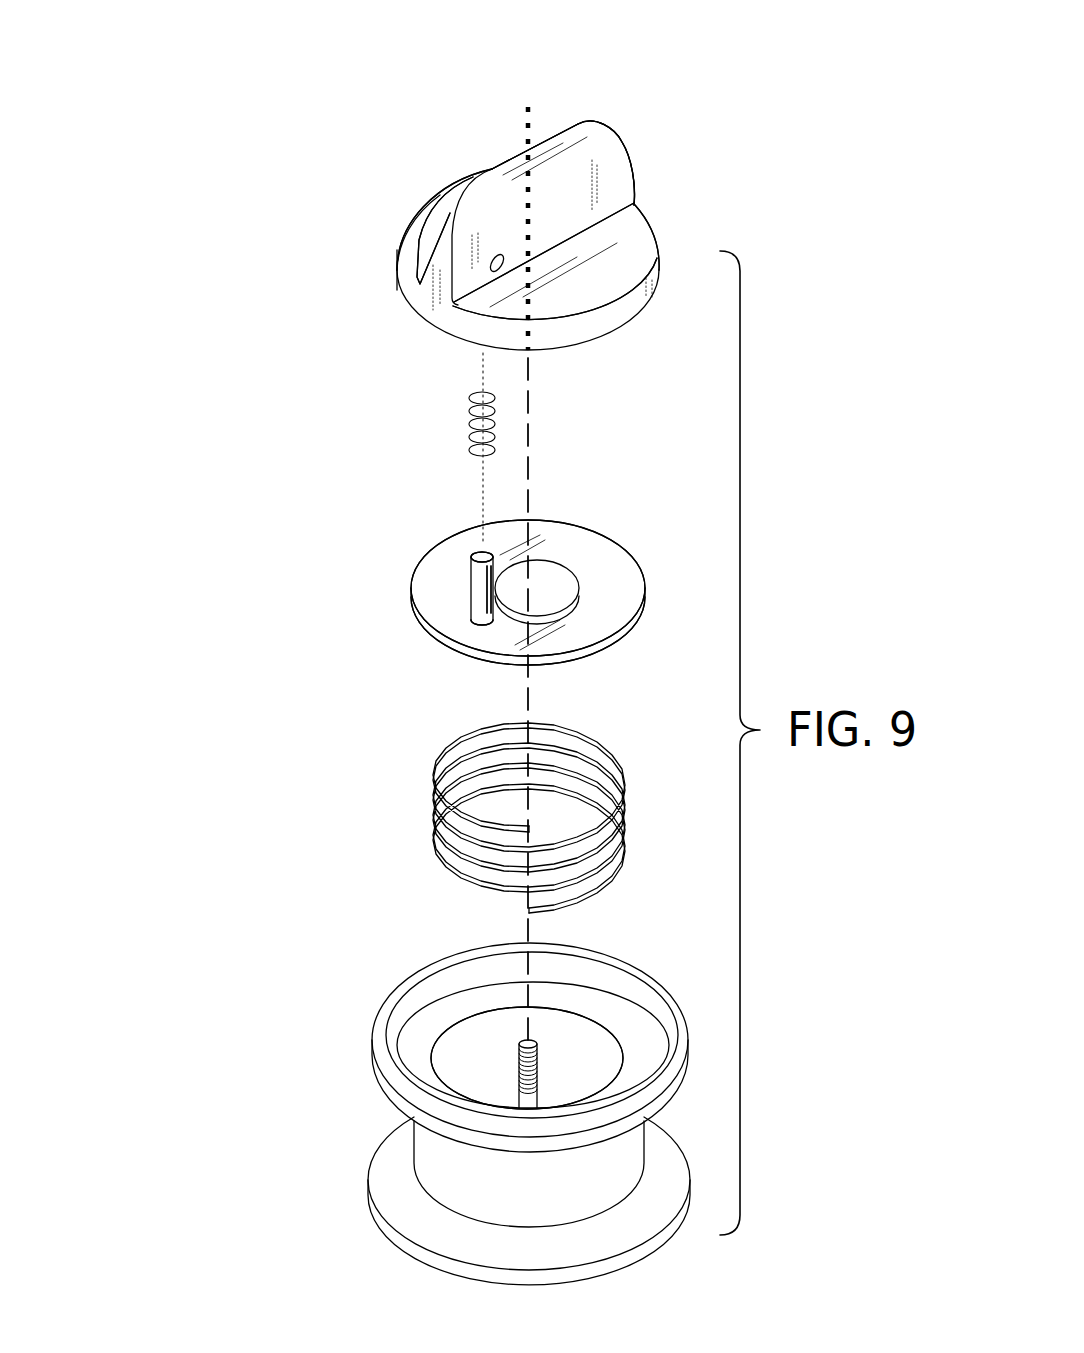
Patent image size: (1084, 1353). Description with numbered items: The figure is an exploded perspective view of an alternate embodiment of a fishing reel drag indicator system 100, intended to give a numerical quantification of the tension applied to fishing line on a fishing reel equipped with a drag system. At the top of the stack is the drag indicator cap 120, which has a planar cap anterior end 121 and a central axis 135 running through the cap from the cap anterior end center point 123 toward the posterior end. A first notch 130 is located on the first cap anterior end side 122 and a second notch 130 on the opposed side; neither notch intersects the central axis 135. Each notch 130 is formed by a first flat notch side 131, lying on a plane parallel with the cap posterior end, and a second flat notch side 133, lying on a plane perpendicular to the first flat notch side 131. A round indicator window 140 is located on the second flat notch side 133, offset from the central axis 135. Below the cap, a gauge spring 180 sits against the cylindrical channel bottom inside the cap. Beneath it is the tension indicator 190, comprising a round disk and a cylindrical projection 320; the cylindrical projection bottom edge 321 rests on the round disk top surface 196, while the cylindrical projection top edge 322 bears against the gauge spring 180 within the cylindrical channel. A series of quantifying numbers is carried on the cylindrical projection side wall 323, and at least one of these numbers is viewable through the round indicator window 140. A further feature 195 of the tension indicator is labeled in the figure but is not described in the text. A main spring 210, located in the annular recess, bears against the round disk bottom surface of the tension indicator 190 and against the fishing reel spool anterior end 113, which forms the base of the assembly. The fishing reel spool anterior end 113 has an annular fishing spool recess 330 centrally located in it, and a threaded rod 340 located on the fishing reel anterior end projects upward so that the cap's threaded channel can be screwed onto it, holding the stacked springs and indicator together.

The fishing reel drag indicator system 100 is at (217, 105).
The fishing reel spool anterior end 113 is at (400, 983).
The drag indicator cap 120 is at (500, 163).
The cap anterior end 121 is at (570, 133).
The first cap anterior end side 122 is at (397, 233).
The cap anterior end center point 123 is at (528, 168).
The notch 130 is at (423, 207).
The first flat notch side 131 is at (613, 270).
The second flat notch side 133 is at (615, 168).
The central axis 135 is at (528, 360).
The round indicator window 140 is at (493, 264).
The gauge spring 180 is at (468, 437).
The tension indicator 190 is at (598, 530).
The lower surface of washer 195 is at (437, 640).
The round disk top surface 196 is at (458, 553).
The main spring 210 is at (435, 767).
The cylindrical projection 320 is at (470, 597).
The cylindrical projection bottom edge 321 is at (470, 615).
The cylindrical projection top edge 322 is at (480, 553).
The cylindrical projection side wall 323 is at (470, 580).
The annular fishing spool recess 330 is at (480, 1067).
The threaded rod 340 is at (535, 1048).